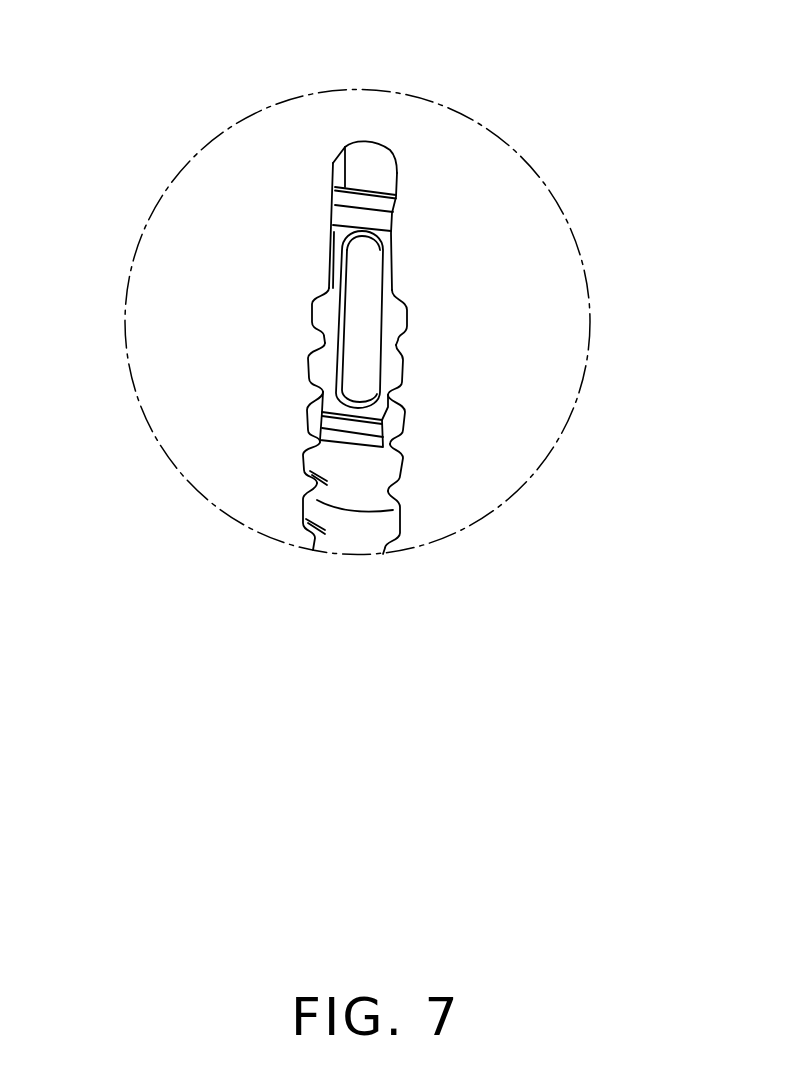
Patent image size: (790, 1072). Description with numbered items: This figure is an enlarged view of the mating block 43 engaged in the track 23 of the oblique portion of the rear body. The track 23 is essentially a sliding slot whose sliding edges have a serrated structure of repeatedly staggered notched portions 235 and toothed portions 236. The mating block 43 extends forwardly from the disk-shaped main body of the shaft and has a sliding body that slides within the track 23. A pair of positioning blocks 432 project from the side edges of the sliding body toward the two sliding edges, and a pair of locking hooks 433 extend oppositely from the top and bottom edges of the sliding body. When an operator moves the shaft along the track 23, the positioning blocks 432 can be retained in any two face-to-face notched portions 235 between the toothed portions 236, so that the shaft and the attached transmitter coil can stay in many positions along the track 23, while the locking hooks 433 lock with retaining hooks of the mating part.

The mating block 43 is at (368, 238).
The locking hooks 433 is at (362, 202).
The positioning blocks 432 is at (323, 310).
The track 23 is at (364, 560).
The notched portions 235 is at (318, 516).
The toothed portions 236 is at (318, 479).